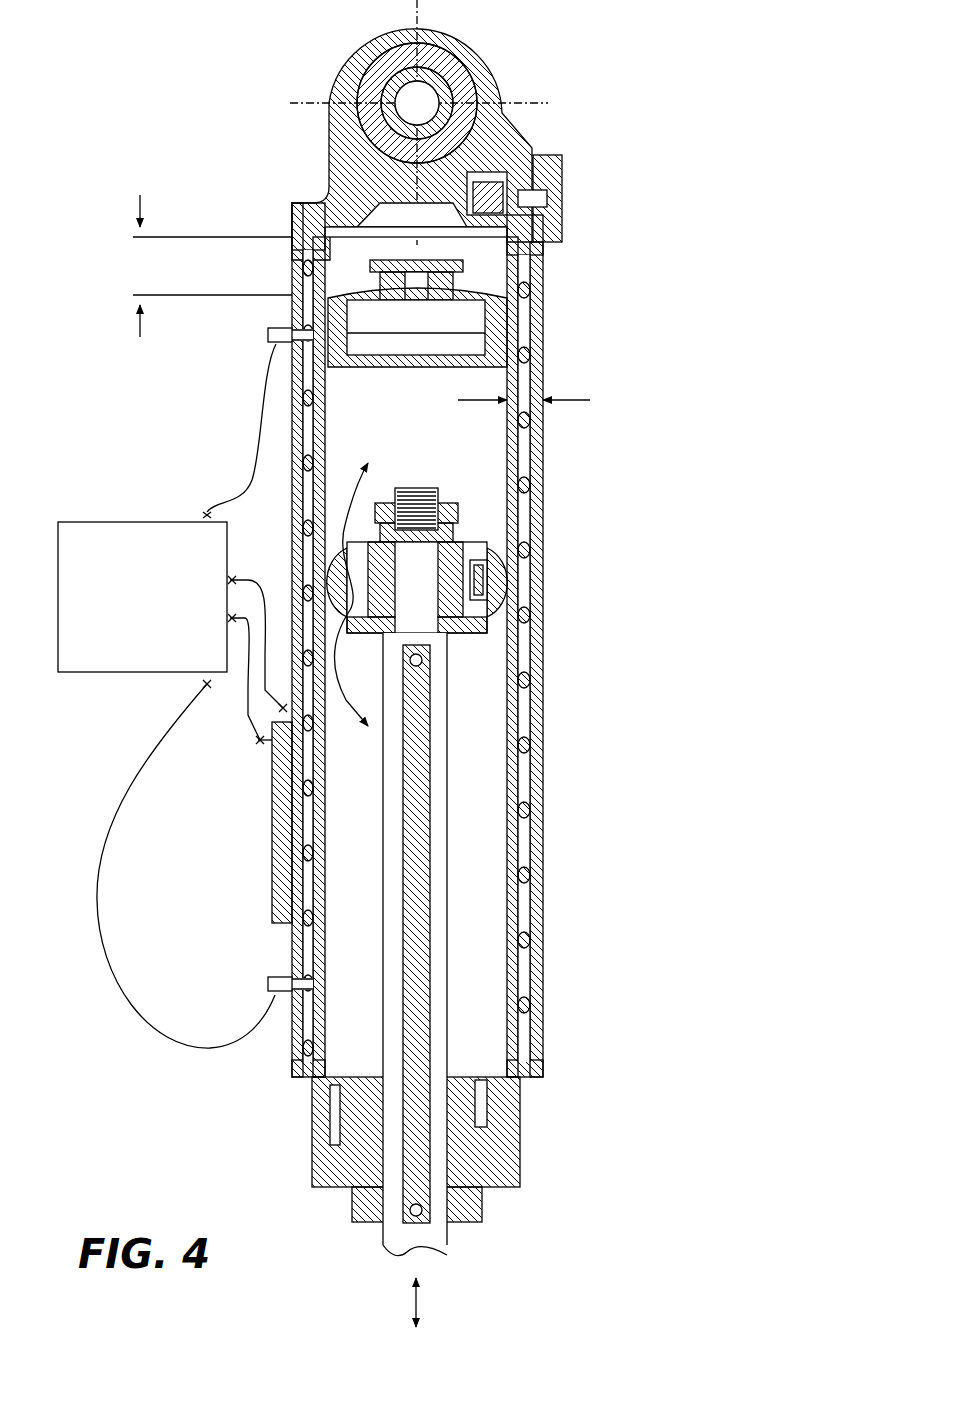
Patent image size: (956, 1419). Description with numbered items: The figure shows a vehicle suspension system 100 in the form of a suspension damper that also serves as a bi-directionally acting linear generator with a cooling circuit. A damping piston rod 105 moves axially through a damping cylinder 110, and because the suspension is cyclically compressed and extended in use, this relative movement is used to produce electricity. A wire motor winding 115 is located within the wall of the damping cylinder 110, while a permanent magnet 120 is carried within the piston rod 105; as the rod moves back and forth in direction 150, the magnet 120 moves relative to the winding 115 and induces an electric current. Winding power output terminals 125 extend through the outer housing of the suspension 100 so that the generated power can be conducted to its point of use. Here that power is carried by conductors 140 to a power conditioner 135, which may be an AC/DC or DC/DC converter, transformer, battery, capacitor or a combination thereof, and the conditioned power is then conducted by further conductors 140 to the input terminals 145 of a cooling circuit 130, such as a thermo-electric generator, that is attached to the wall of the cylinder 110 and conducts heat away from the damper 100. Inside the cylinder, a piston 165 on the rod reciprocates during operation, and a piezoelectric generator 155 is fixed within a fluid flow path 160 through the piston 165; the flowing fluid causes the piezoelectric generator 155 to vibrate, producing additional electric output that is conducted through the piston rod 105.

The vehicle suspension system 100 is at (655, 170).
The damping piston rod 105 is at (450, 862).
The damping cylinder 110 is at (553, 398).
The wire motor winding 115 is at (541, 944).
The permanent magnet 120 is at (422, 1013).
The winding power output terminals 125 is at (268, 335).
The cooling circuit 130 is at (272, 878).
The power conditioner 135 is at (140, 522).
The conductors 140 is at (248, 440).
The input terminals 145 is at (265, 744).
The direction 150 is at (420, 1302).
The piezoelectric generator 155 is at (487, 607).
The fluid flow path 160 is at (352, 505).
The piston 165 is at (466, 638).